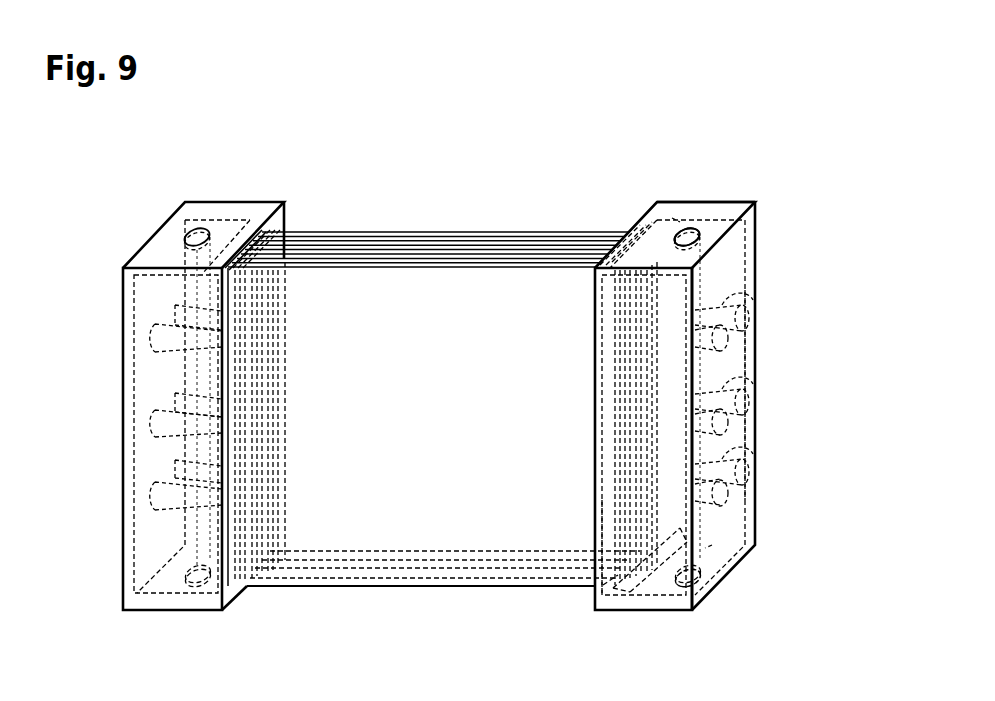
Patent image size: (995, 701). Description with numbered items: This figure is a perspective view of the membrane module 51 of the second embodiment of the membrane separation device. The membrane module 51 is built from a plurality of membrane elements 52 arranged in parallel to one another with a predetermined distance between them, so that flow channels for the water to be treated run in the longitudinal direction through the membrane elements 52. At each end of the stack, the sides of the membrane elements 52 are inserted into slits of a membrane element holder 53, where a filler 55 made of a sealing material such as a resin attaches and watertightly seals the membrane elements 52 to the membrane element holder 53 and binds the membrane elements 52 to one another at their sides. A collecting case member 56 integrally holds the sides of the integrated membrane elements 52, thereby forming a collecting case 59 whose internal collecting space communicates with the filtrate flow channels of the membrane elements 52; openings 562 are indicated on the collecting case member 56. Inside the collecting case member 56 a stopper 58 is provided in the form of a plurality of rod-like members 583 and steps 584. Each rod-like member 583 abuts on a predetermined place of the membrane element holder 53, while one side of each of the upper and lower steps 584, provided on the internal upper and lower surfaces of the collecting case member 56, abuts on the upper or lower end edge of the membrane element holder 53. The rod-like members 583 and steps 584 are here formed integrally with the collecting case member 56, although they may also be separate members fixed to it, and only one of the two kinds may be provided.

The membrane module 51 is at (492, 207).
The membrane element 52 is at (388, 293).
The membrane element holder 53 is at (600, 502).
The filler 55 is at (627, 595).
The collecting case member 56 is at (757, 222).
The stopper 58 is at (833, 295).
The collecting case 59 is at (736, 193).
The mounting hole 562 is at (683, 228).
The rod-like member 583 is at (728, 292).
The step 584 is at (672, 218).